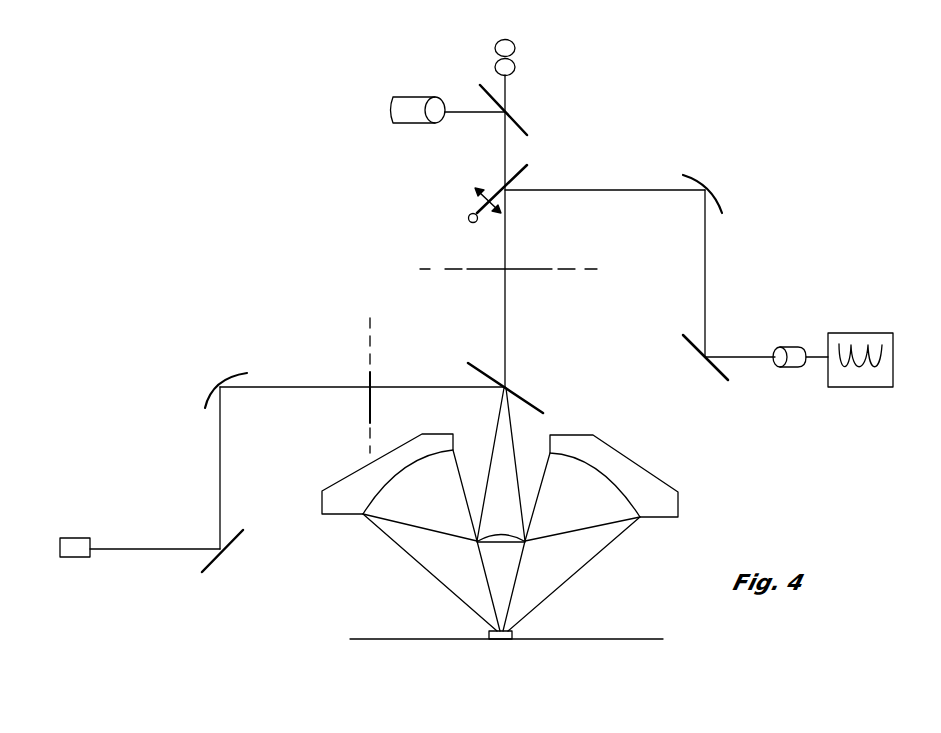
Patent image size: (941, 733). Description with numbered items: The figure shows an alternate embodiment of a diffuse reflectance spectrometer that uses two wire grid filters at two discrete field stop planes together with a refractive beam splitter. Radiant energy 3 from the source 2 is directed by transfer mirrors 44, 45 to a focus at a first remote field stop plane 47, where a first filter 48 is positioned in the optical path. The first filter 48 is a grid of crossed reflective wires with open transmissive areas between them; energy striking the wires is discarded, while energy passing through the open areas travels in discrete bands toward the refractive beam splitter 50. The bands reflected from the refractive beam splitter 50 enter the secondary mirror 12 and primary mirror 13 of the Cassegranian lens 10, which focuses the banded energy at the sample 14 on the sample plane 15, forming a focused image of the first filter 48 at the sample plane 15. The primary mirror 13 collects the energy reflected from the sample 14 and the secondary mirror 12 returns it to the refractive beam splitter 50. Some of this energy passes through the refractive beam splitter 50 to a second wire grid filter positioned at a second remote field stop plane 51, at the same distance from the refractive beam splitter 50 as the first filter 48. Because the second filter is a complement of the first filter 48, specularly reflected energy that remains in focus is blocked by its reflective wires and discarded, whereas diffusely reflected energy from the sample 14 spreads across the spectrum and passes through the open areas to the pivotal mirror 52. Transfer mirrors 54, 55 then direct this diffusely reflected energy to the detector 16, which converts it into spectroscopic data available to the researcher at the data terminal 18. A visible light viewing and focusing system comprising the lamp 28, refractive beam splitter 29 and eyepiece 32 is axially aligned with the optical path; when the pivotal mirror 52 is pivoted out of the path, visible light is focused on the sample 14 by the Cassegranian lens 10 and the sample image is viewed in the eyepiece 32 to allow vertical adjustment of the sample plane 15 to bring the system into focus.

The source 2 is at (76, 538).
The radiant energy 3 is at (149, 548).
The Cassegranian lens 10 is at (362, 465).
The secondary mirror 12 is at (520, 532).
The primary mirror 13 is at (613, 480).
The sample 14 is at (500, 640).
The sample plane 15 is at (633, 640).
The detector 16 is at (784, 348).
The data terminal 18 is at (893, 341).
The lamp 28 is at (410, 117).
The refractive beam splitter 29 is at (528, 120).
The eyepiece 32 is at (521, 38).
The transfer mirror 44 is at (215, 560).
The transfer mirror 45 is at (230, 376).
The first remote field stop plane 47 is at (370, 322).
The first filter 48 is at (370, 370).
The refractive beam splitter 50 is at (523, 268).
The second remote field stop plane 51 is at (420, 270).
The pivotal mirror 52 is at (522, 167).
The transfer mirror 54 is at (703, 180).
The transfer mirror 55 is at (722, 378).